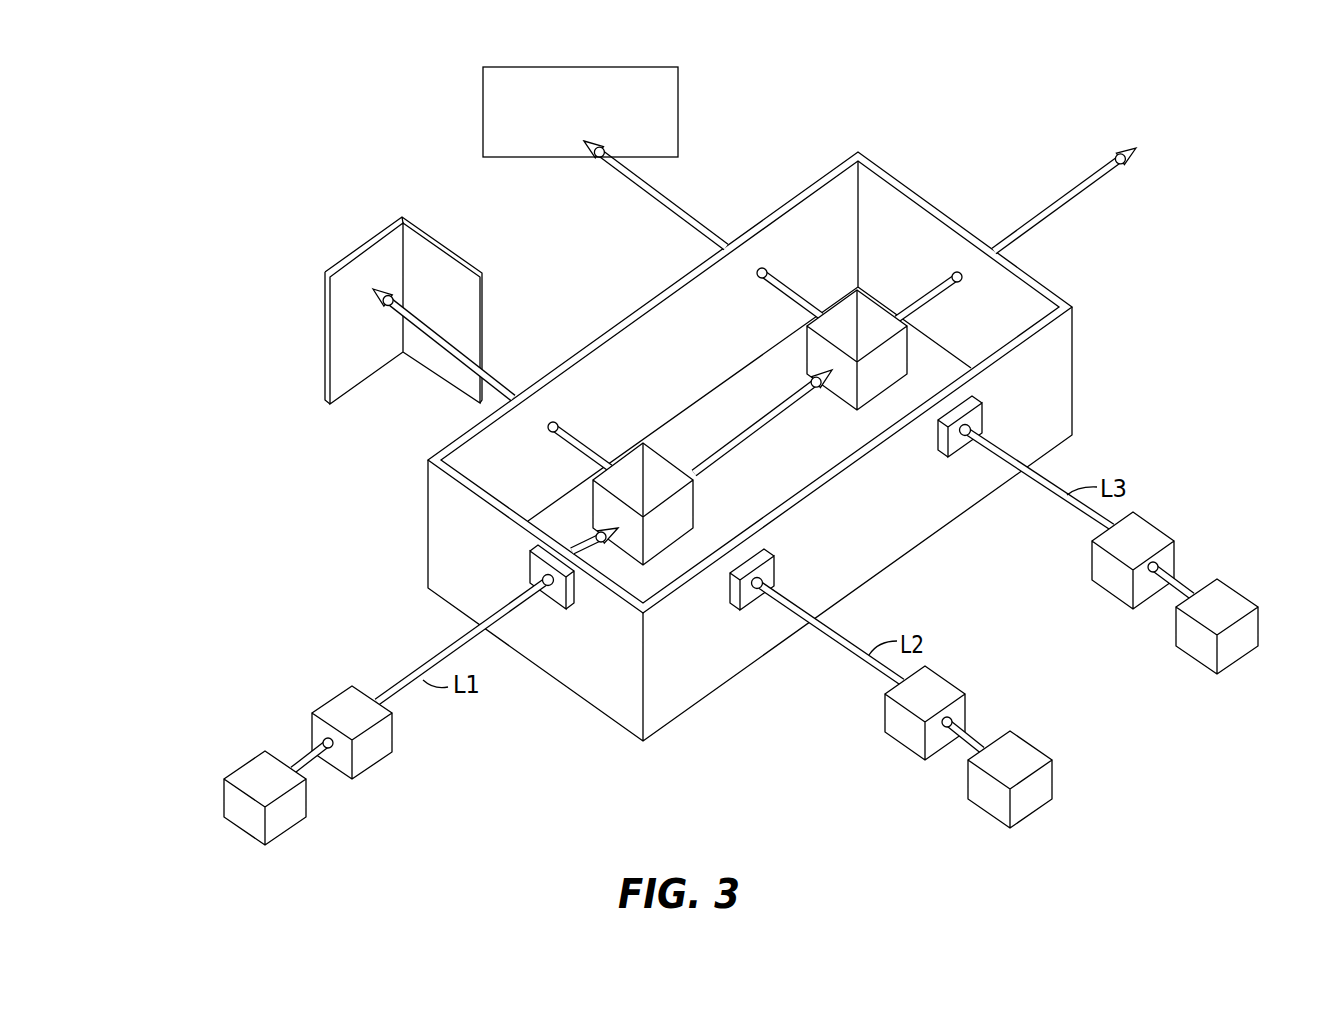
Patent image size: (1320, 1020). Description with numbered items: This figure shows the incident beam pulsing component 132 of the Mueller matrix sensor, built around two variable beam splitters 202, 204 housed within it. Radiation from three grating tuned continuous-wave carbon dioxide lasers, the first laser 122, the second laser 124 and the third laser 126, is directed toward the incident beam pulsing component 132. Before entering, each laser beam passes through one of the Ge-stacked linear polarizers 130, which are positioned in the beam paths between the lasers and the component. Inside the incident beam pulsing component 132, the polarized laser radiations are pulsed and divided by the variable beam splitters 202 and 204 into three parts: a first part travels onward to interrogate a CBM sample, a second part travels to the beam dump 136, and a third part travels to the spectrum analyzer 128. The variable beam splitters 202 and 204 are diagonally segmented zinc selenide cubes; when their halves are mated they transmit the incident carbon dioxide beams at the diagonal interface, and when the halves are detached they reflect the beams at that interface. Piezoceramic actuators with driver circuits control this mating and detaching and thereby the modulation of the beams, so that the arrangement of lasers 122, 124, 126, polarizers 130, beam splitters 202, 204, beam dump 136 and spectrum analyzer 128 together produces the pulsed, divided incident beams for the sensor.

The first laser 122 is at (232, 772).
The second laser 124 is at (988, 805).
The third laser 126 is at (1232, 593).
The spectrum analyzer 128 is at (482, 128).
The Ge-stacked linear polarizers 130 is at (332, 697).
The incident beam pulsing component 132 is at (930, 120).
The beam dump 136 is at (358, 248).
The variable beam splitter 202 is at (632, 540).
The variable beam splitter 204 is at (873, 315).